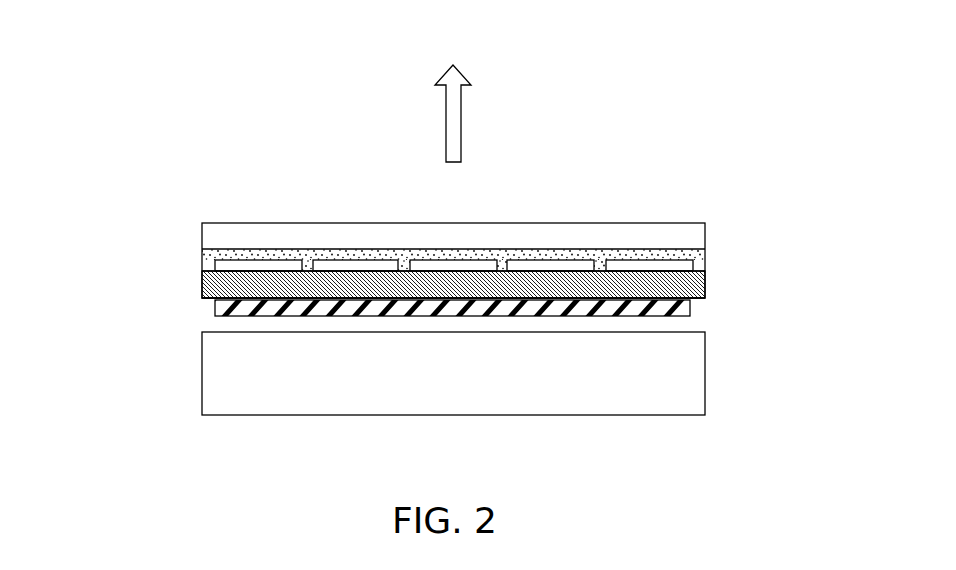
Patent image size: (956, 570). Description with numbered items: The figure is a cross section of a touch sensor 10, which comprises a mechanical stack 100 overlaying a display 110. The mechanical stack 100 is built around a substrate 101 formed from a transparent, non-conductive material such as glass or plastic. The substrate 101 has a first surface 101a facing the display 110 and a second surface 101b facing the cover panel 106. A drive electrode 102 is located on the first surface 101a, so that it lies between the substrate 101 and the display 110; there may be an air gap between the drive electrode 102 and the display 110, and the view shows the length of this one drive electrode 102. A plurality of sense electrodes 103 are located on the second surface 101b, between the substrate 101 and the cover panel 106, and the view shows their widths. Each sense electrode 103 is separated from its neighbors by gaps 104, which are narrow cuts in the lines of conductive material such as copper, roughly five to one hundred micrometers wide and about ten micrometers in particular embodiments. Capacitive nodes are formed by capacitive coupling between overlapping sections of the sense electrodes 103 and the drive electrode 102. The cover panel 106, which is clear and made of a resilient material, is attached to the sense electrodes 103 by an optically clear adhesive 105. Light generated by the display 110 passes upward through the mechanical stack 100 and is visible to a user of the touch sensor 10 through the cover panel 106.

The touch sensor 10 is at (157, 151).
The mechanical stack 100 is at (790, 222).
The substrate 101 is at (205, 282).
The first surface 101a is at (693, 310).
The second surface 101b is at (670, 268).
The drive electrode 102 is at (208, 307).
The sense electrodes 103 is at (250, 258).
The gaps 104 is at (307, 267).
The optically clear adhesive 105 is at (208, 258).
The cover panel 106 is at (204, 221).
The display 110 is at (683, 382).